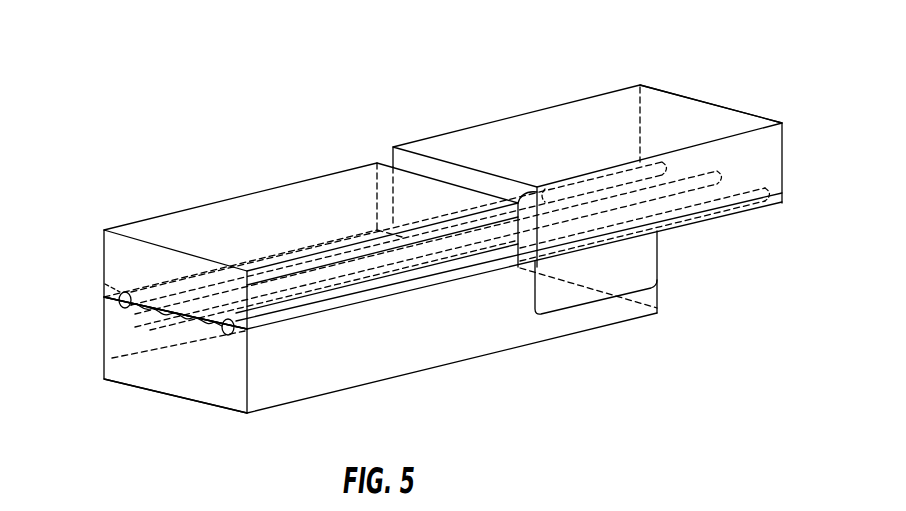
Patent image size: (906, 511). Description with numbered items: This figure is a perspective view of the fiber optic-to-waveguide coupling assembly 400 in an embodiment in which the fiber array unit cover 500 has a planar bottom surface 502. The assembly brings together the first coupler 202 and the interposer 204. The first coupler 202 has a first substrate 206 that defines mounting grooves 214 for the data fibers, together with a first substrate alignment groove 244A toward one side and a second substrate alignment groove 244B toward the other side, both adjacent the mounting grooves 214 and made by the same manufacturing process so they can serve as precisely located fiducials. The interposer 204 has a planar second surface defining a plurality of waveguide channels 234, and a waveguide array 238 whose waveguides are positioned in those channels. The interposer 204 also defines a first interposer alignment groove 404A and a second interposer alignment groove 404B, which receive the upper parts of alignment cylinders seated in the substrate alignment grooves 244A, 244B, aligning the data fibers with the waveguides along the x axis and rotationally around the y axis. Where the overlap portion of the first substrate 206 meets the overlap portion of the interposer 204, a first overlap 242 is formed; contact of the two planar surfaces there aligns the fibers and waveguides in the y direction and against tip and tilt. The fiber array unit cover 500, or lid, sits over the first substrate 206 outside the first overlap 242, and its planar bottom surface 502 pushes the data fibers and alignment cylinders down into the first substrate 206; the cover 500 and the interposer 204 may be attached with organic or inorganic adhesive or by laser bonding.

The first coupler 202 is at (267, 407).
The interposer 204 is at (698, 96).
The first substrate 206 is at (466, 358).
The mounting grooves 214 is at (143, 318).
The waveguide channels 234 is at (620, 178).
The waveguide array 238 is at (707, 172).
The first overlap 242 is at (604, 303).
The first substrate alignment groove 244A is at (122, 293).
The second substrate alignment groove 244B is at (229, 334).
The fiber optic-to-waveguide coupling assembly 400 is at (485, 125).
The first interposer alignment groove 404A is at (735, 208).
The second interposer alignment groove 404B is at (560, 183).
The fiber array unit cover 500 is at (182, 207).
The planar bottom surface 502 is at (177, 308).